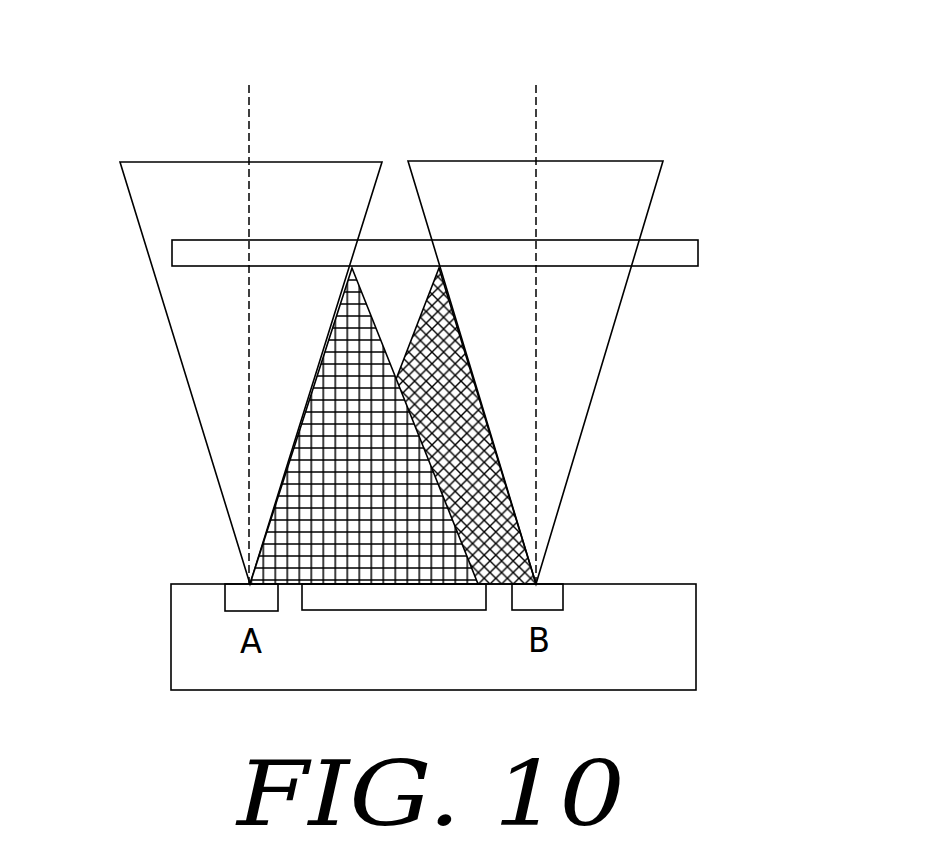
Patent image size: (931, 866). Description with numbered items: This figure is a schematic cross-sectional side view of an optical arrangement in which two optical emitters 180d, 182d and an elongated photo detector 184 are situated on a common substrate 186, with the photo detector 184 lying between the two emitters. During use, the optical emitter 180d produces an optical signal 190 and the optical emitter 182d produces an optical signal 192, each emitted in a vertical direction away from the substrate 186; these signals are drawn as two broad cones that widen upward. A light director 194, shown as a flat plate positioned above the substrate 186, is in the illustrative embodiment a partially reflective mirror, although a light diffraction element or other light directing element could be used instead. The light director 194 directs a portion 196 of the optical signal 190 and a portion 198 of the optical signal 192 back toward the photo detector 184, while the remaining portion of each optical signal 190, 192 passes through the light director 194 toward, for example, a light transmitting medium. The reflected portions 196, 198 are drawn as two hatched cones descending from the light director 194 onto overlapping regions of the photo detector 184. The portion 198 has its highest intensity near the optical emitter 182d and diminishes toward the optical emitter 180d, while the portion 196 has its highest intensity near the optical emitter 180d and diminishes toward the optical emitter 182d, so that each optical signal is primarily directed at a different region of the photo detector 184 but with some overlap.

The optical emitter 180d is at (553, 592).
The optical emitter 182d is at (232, 602).
The elongated photo detector 184 is at (380, 597).
The common substrate 186 is at (680, 648).
The optical signal 190 is at (588, 323).
The optical signal 192 is at (202, 375).
The light director 194 is at (653, 253).
The portion of optical signal 196 is at (422, 307).
The portion of optical signal 198 is at (365, 302).